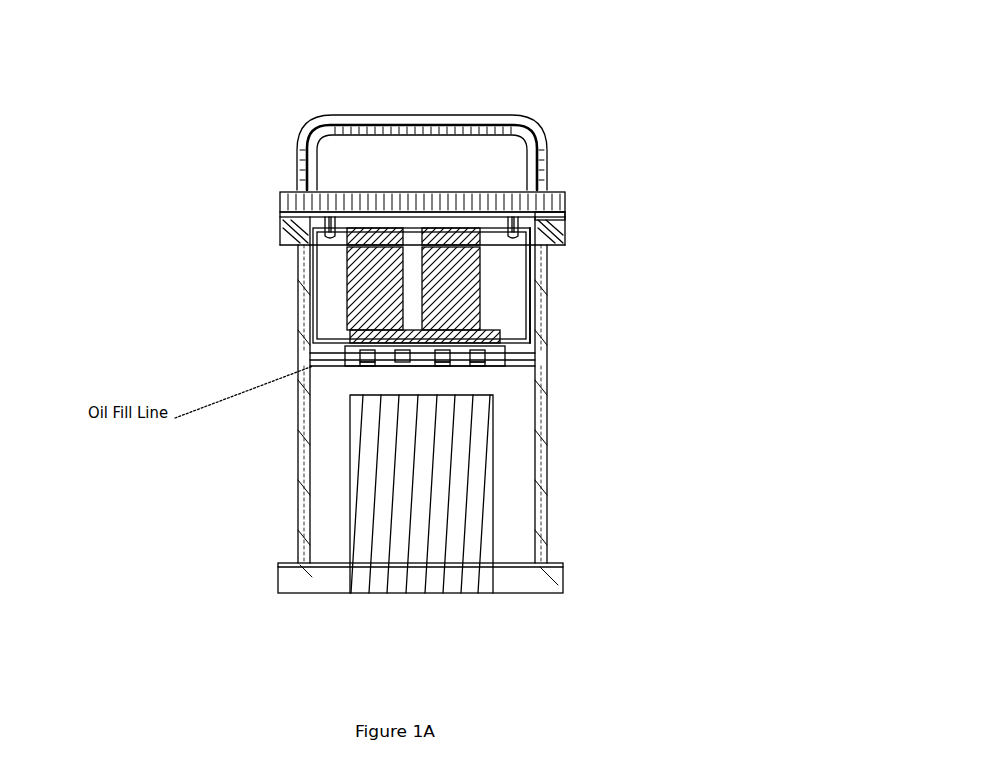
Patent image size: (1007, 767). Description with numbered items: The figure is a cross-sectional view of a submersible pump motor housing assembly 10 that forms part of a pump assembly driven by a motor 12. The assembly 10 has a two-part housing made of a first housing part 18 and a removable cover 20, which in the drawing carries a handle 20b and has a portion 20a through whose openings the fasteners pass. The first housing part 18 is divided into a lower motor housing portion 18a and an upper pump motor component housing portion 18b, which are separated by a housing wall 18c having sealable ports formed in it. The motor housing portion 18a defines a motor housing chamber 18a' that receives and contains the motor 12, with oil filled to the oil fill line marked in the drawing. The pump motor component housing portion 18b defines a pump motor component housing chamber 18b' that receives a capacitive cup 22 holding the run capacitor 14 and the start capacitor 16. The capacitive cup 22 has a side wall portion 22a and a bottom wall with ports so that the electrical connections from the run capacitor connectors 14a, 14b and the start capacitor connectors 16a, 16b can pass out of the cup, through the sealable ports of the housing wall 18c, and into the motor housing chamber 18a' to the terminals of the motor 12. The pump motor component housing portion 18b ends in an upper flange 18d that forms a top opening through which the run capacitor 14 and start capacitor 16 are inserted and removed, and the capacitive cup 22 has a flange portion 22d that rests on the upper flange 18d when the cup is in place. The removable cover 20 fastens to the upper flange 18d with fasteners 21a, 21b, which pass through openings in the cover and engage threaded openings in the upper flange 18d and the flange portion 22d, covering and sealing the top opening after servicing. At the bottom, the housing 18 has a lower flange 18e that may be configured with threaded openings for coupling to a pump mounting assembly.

The submersible pump motor housing assembly 10 is at (134, 49).
The motor 12 is at (494, 481).
The run capacitor 14 is at (344, 311).
The run capacitor connector 14a is at (380, 352).
The run capacitor connector 14b is at (402, 362).
The start capacitor 16 is at (482, 289).
The start capacitor connector 16a is at (443, 362).
The start capacitor connector 16b is at (477, 362).
The first housing part 18 is at (547, 372).
The motor housing portion 18a is at (168, 464).
The motor housing chamber 18a' is at (310, 464).
The pump motor component housing portion 18b is at (207, 279).
The pump motor component housing chamber 18b' is at (643, 285).
The housing wall 18c is at (515, 360).
The upper flange 18d is at (565, 222).
The lower flange 18e is at (278, 578).
The removable housing cover 20 is at (542, 165).
The cover lip 20a is at (283, 205).
The handle 20b is at (528, 124).
The fastener 21a is at (330, 222).
The fastener 21b is at (540, 225).
The capacitive cup 22 is at (537, 330).
The side wall portion 22a is at (530, 291).
The flange portion 22d is at (561, 212).